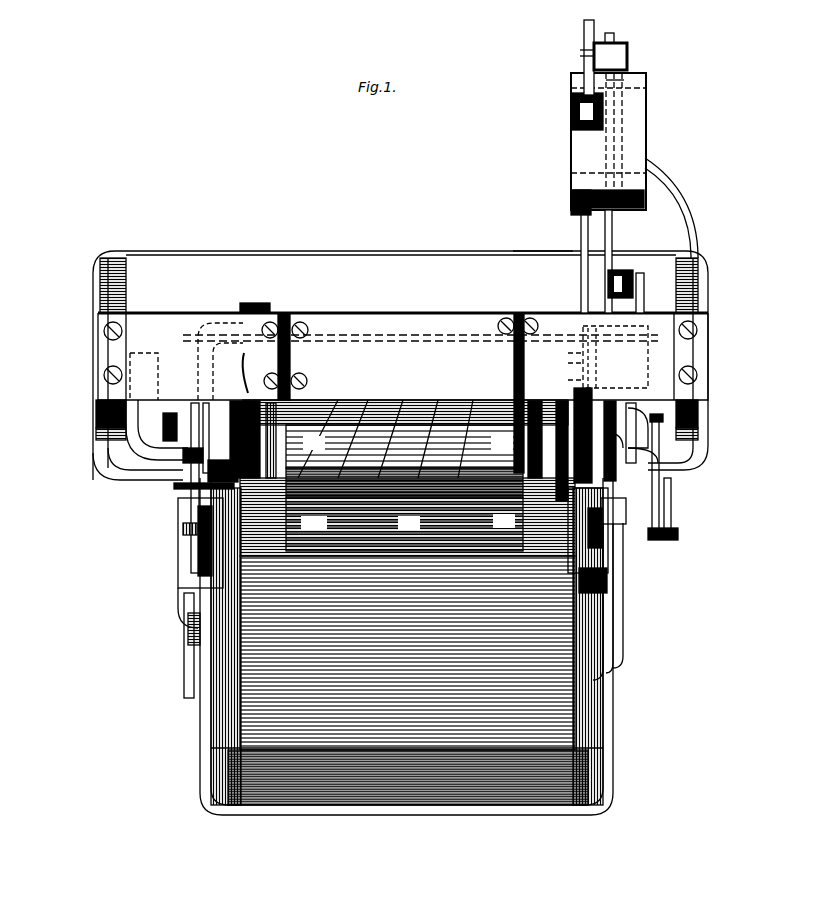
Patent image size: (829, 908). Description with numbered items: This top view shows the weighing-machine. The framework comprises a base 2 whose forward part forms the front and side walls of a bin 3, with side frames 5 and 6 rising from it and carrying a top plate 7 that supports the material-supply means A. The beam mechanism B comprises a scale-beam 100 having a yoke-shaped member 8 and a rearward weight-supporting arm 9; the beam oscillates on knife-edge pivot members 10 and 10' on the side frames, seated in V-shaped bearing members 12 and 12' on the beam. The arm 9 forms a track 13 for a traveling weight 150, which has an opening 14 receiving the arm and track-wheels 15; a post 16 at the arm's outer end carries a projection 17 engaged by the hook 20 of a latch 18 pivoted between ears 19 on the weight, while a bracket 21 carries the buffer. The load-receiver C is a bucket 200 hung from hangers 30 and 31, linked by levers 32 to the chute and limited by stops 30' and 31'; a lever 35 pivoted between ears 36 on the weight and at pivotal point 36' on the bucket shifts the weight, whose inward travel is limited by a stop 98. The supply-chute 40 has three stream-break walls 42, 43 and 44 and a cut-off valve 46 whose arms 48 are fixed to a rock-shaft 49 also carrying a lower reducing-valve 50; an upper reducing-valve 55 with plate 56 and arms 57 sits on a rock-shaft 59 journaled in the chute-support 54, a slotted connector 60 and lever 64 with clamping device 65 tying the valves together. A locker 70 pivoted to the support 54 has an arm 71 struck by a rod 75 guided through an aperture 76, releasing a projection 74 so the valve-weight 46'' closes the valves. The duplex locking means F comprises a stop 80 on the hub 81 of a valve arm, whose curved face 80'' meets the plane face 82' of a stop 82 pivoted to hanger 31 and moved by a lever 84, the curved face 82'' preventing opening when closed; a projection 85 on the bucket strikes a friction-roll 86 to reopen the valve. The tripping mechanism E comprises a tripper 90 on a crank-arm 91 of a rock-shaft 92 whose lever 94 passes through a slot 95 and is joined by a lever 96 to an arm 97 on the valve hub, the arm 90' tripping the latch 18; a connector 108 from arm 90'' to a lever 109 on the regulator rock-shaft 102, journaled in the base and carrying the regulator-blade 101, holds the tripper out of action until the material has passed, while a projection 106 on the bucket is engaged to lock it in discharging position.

The base 2 is at (145, 255).
The bin 3 is at (495, 778).
The upright or side frame 5 is at (95, 405).
The upright or side frame 6 is at (700, 401).
The top plate 7 is at (155, 322).
The yoke-shaped member 8 is at (560, 300).
The weight-supporting arm 9 is at (608, 252).
The knife-edge pivot member 10 is at (649, 384).
The knife-edge pivot member 10' is at (147, 441).
The V-shaped bearing member 12 is at (630, 443).
The V-shaped bearing member 12' is at (162, 383).
The track 13 is at (600, 226).
The opening 14 is at (636, 185).
The grooved track rolls or wheels 15 is at (612, 72).
The post or bar 16 is at (611, 38).
The projection 17 is at (574, 43).
The latch 18 is at (578, 50).
The projections or ears 19 is at (570, 108).
The hook 20 is at (577, 40).
The arm or bracket 21 is at (697, 203).
The hanger 30 is at (618, 554).
The stop 30' is at (488, 394).
The hanger 31 is at (167, 556).
The stop 31' is at (219, 438).
The links or levers 32 is at (600, 572).
The lever 35 is at (575, 236).
The ears or projections 36 is at (563, 199).
The pivotal point 36' is at (636, 517).
The supply-chute 40 is at (362, 470).
The stream-break wall 42 is at (382, 470).
The stream-break wall 43 is at (578, 600).
The stream-break wall 44 is at (350, 432).
The cut-off valve 46 is at (222, 383).
The valve-weight 46'' is at (219, 367).
The valve-arms 48 is at (190, 526).
The rock-shaft 49 is at (190, 500).
The reducing-valve 50 is at (398, 470).
The chute-support 54 is at (285, 322).
The reducing-valve 55 is at (342, 358).
The convexed valve plate or blade 56 is at (322, 395).
The valve-arms 57 is at (302, 372).
The rock-shaft 59 is at (330, 392).
The slotted link or lever 60 is at (502, 372).
The lever 64 is at (583, 520).
The clamping device 65 is at (291, 365).
The locker 70 is at (248, 378).
The arm 71 is at (294, 301).
The projection 74 is at (215, 413).
The rod 75 is at (245, 372).
The aperture 76 is at (240, 352).
The stop 80 is at (159, 596).
The curved stop-face 80'' is at (152, 615).
The hub 81 is at (190, 512).
The stop 82 is at (173, 641).
The plane stop-face 82' is at (143, 603).
The curved stop-face 82'' is at (173, 660).
The lever 84 is at (180, 570).
The projection 85 is at (182, 478).
The friction-roll 86 is at (212, 453).
The tripper 90 is at (655, 291).
The arm 90' is at (639, 271).
The arm 90'' is at (722, 386).
The crank-arm 91 is at (630, 336).
The rock-shaft 92 is at (625, 299).
The lever 94 is at (575, 358).
The slot 95 is at (560, 360).
The lever 96 is at (614, 511).
The arm 97 is at (590, 555).
The stop 98 is at (596, 300).
The scale-beam 100 is at (161, 365).
The regulator-blade 101 is at (585, 592).
The rock-shaft 102 is at (663, 466).
The stop or projection 106 is at (592, 678).
The connector 108 is at (668, 455).
The link or lever 109 is at (664, 493).
The traveling weight 150 is at (636, 140).
The receptacle or bucket 200 is at (565, 718).
The material-supply means A is at (368, 375).
The beam mechanism B is at (620, 141).
The load-receiver C is at (595, 446).
The tripping mechanism E is at (656, 349).
The duplex locking means F is at (163, 576).